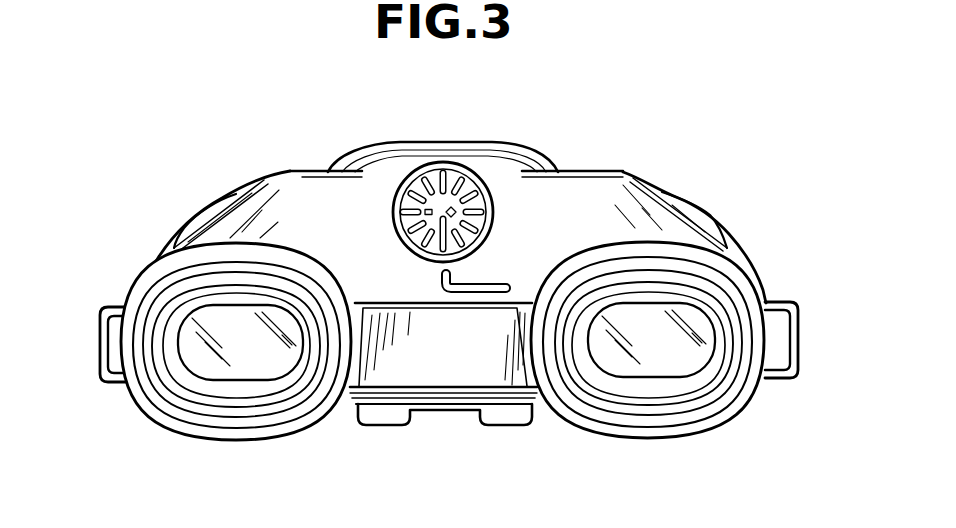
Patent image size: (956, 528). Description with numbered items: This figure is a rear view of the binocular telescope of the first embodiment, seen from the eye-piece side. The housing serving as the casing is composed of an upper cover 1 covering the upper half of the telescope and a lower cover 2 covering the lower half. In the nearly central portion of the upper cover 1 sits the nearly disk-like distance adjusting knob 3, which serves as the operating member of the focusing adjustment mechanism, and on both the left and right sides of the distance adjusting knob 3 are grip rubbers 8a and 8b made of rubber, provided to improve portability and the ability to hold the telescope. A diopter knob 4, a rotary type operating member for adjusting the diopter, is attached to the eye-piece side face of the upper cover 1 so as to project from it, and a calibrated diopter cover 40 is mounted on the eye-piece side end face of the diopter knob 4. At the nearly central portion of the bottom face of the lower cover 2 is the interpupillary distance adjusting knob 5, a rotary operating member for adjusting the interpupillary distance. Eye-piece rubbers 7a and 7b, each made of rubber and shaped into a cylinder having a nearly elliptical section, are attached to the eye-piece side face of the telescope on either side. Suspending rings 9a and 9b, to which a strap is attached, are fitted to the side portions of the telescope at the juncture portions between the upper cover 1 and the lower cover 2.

The upper cover 1 is at (647, 210).
The lower cover 2 is at (382, 368).
The distance adjusting knob 3 is at (503, 148).
The diopter knob 4 is at (428, 167).
The calibrated diopter cover 40 is at (470, 223).
The interpupillary distance adjusting knob 5 is at (512, 413).
The eye-piece rubber 7a is at (727, 406).
The eye-piece rubber 7b is at (174, 405).
The grip rubber 8a is at (730, 246).
The grip rubber 8b is at (150, 254).
The suspending ring 9a is at (797, 328).
The suspending ring 9b is at (100, 348).